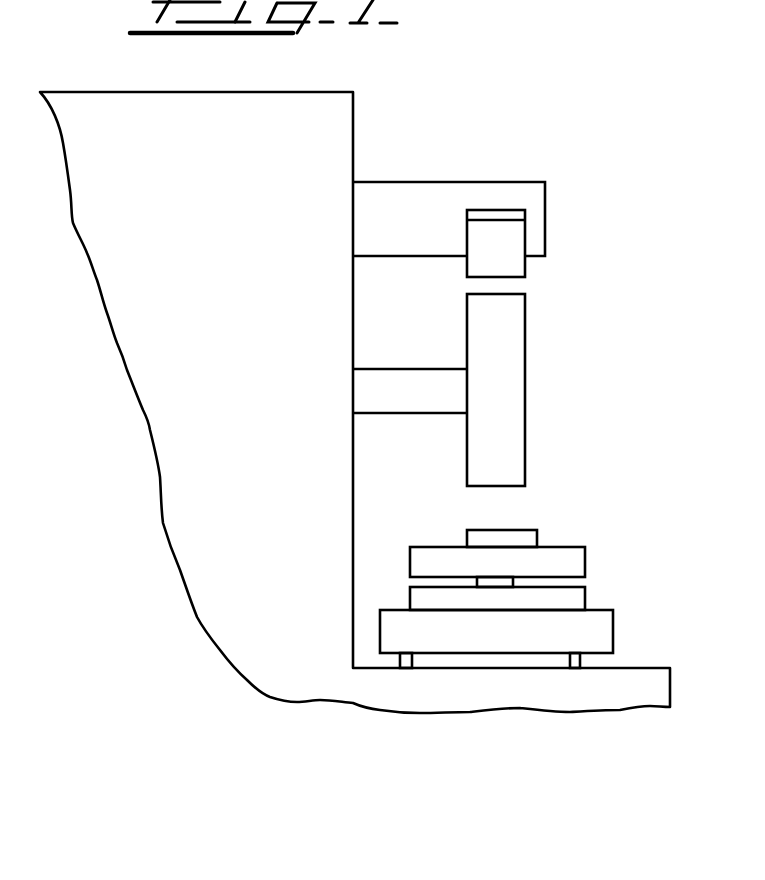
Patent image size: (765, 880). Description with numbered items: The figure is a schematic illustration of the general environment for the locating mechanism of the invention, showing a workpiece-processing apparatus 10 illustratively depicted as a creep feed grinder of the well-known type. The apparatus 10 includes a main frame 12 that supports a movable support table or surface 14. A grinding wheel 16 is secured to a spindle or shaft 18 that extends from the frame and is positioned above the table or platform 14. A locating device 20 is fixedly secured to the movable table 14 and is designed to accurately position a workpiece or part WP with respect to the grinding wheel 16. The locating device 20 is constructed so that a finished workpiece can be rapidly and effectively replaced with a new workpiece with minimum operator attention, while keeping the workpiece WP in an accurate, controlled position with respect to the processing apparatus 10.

The workpiece-processing apparatus 10 is at (203, 152).
The main frame 12 is at (125, 113).
The movable support table 14 is at (613, 625).
The grinding wheel 16 is at (510, 327).
The spindle 18 is at (370, 375).
The locating device 20 is at (398, 562).
The workpiece WP is at (477, 535).